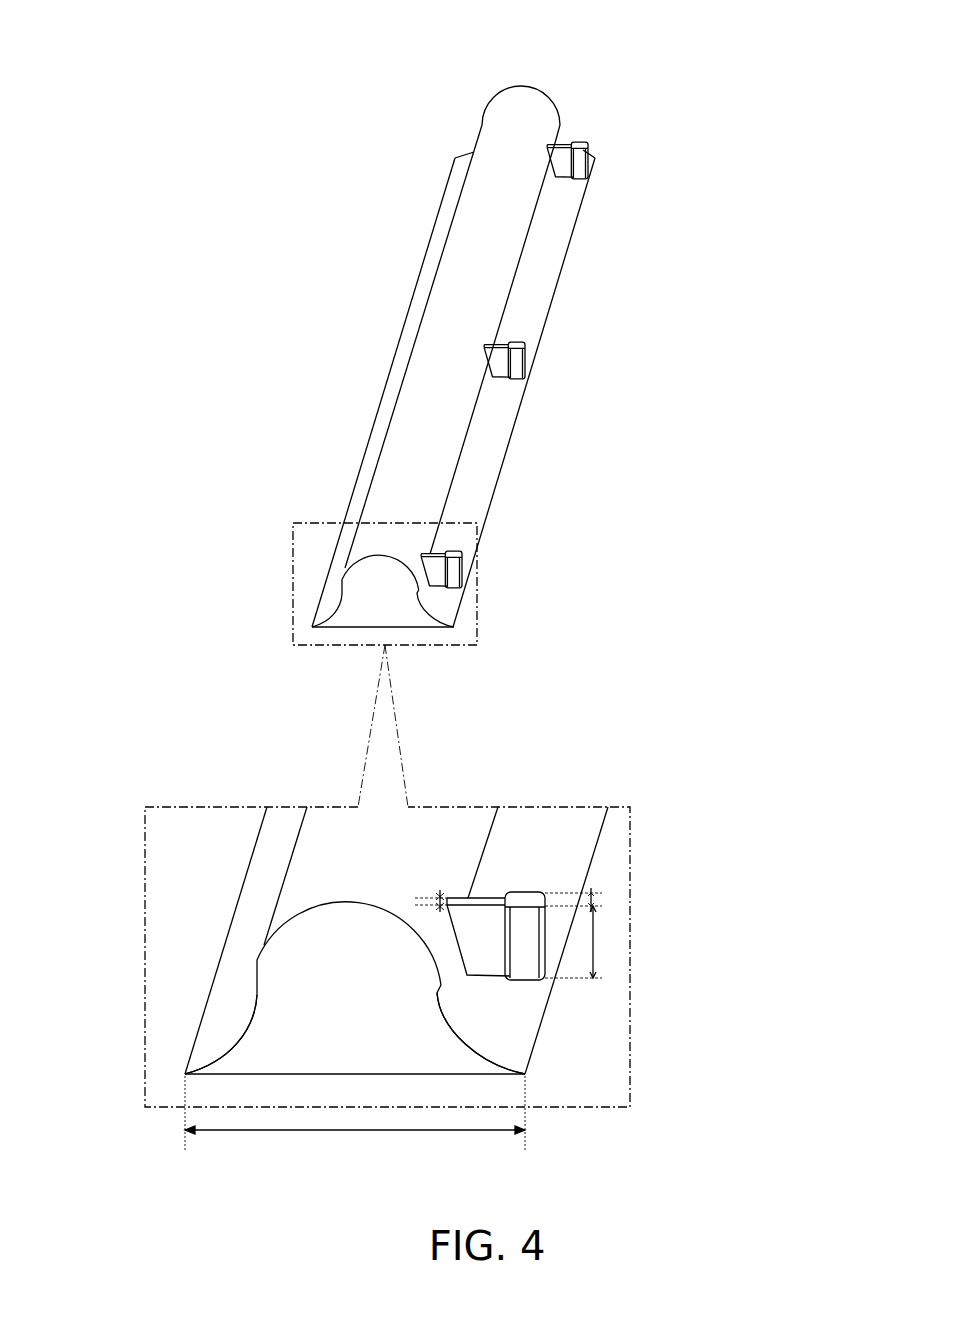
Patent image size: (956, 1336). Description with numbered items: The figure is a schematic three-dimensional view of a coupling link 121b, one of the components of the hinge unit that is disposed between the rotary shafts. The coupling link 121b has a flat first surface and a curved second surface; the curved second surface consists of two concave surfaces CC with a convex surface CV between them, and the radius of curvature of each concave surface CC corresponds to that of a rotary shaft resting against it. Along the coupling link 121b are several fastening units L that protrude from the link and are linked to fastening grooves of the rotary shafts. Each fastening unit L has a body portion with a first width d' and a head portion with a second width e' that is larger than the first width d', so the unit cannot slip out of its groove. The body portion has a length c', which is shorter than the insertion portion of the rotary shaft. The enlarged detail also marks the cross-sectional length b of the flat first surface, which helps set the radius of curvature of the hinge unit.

The coupling link 121b is at (523, 107).
The convex surface CV is at (340, 902).
The concave surface CC is at (249, 1036).
The fastening unit L is at (525, 890).
The first width d' is at (427, 878).
The second width e' is at (607, 899).
The length of the body portion c' is at (578, 942).
The cross-sectional length of the first surface b is at (355, 1116).